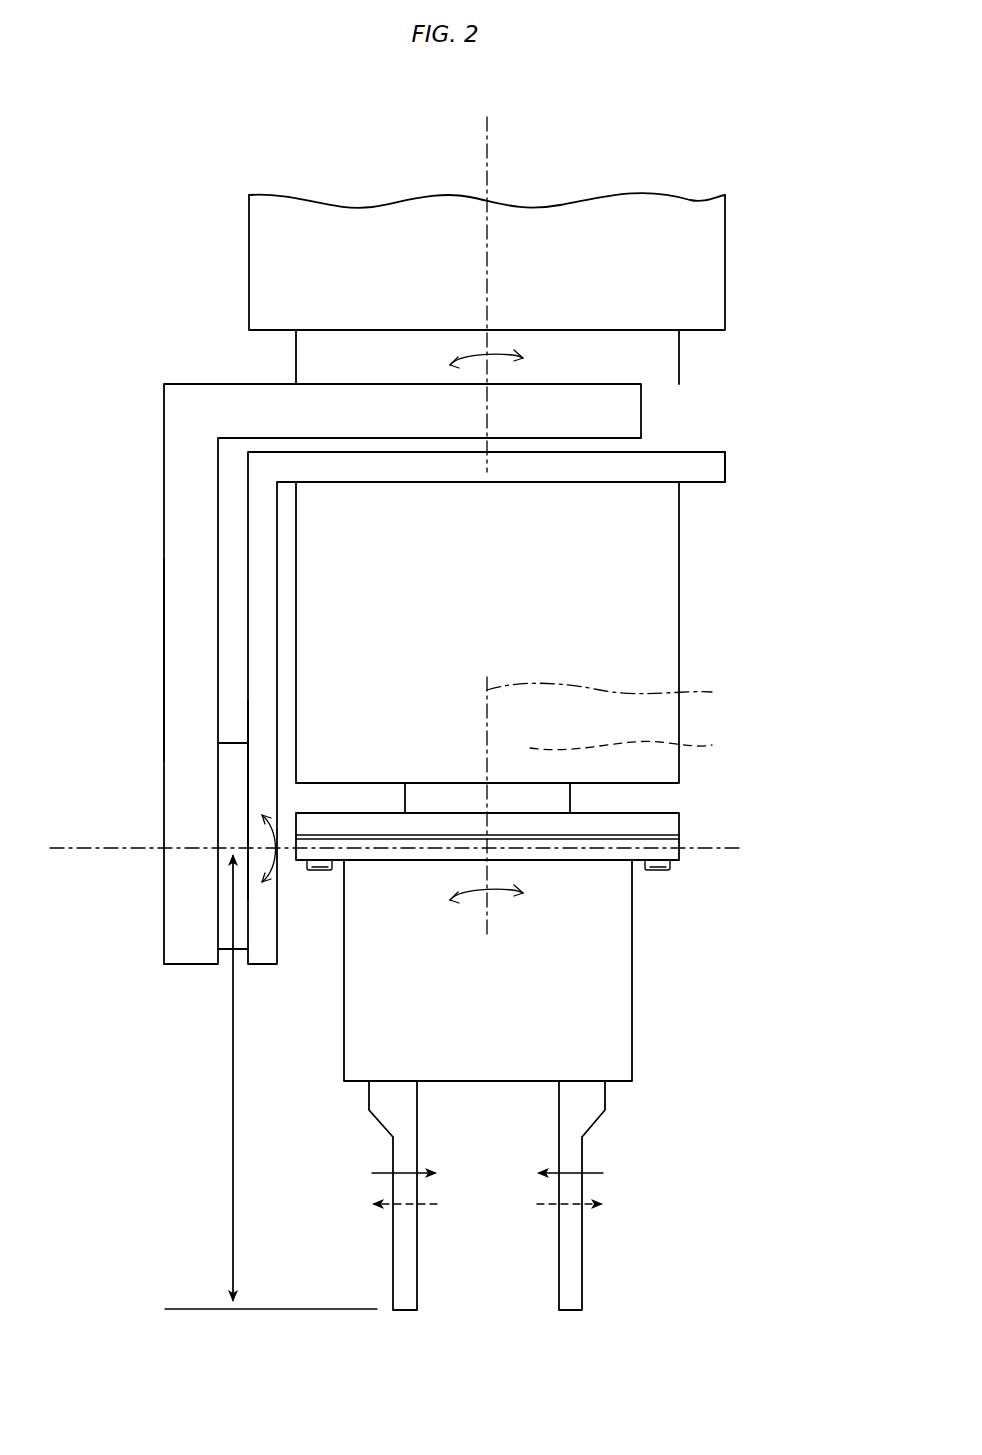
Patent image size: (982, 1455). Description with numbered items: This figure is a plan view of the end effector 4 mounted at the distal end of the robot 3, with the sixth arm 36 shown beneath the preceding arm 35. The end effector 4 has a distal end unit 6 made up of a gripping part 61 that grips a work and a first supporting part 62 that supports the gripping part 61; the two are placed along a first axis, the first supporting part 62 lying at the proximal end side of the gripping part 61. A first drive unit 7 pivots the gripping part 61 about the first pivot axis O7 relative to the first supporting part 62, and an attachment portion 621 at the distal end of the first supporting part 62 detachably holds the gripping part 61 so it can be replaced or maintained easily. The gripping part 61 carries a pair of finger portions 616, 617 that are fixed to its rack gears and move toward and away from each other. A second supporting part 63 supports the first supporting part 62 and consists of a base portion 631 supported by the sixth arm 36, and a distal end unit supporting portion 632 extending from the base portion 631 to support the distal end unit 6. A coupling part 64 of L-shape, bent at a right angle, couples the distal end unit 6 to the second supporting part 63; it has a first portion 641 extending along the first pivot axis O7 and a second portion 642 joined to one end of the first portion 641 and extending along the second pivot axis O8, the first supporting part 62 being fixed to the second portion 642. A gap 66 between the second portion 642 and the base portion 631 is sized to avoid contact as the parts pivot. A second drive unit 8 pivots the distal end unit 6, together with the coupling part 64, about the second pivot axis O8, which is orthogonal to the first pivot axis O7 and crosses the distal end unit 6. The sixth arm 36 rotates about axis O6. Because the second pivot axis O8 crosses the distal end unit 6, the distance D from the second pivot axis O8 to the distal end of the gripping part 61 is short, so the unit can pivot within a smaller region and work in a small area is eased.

The robot 3 is at (153, 268).
The end effector 4 is at (106, 512).
The distal end unit 6 is at (636, 953).
The first drive unit 7 is at (632, 746).
The second drive unit 8 is at (182, 868).
The fifth arm 35 is at (708, 268).
The sixth arm 36 is at (660, 360).
The gripping part 61 is at (612, 1026).
The first supporting part 62 is at (663, 578).
The second supporting part 63 is at (158, 735).
The coupling part 64 is at (241, 573).
The gap 66 is at (576, 447).
The finger portion 616 is at (405, 1295).
The finger portion 617 is at (570, 1295).
The attachment portion 621 is at (663, 818).
The base portion 631 is at (358, 405).
The distal end unit supporting portion 632 is at (180, 648).
The first portion 641 is at (262, 777).
The second portion 642 is at (708, 470).
The sixth rotation axis O6 is at (520, 511).
The first pivot axis O7 is at (645, 691).
The second pivot axis O8 is at (443, 849).
The distance D is at (271, 1082).